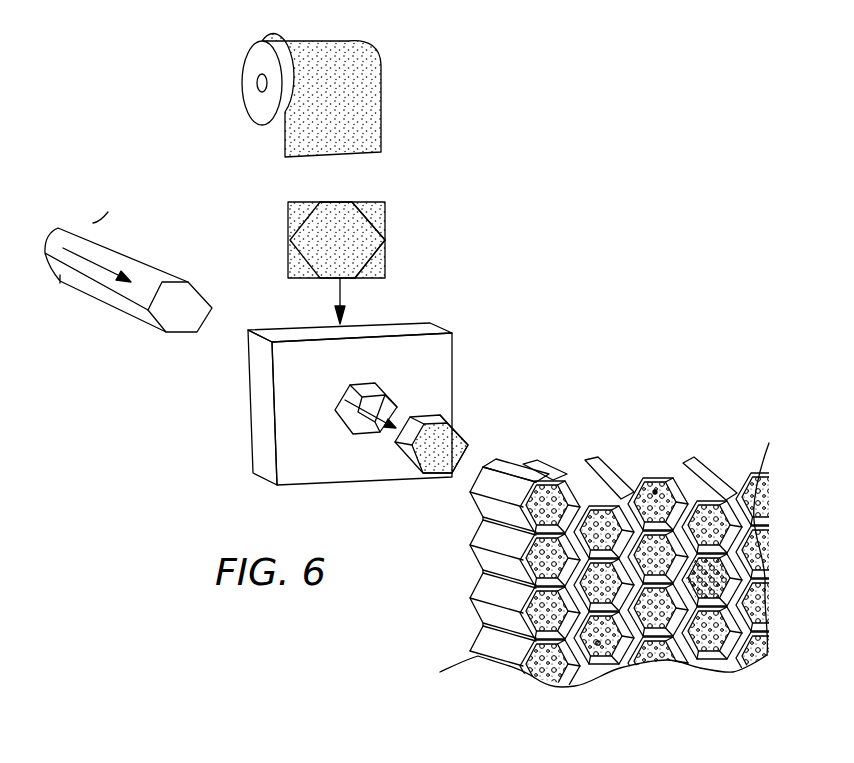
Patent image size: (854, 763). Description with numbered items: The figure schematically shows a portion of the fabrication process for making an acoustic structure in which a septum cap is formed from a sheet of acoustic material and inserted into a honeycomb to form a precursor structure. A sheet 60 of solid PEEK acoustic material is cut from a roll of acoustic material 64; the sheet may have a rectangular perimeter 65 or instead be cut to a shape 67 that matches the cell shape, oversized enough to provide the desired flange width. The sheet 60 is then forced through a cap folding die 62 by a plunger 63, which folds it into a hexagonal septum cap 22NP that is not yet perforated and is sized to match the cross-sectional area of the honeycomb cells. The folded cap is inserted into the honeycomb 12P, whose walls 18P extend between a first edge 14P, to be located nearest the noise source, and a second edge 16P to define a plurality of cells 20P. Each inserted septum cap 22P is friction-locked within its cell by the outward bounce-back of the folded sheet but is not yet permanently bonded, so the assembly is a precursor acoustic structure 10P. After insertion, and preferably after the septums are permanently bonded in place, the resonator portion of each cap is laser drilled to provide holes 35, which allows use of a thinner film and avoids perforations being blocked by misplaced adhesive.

The roll of acoustic material 64 is at (357, 62).
The perimeter 65 is at (367, 200).
The shape matching the cell shape 67 is at (302, 220).
The sheet of acoustic material 60 is at (385, 253).
The cap folding die 62 is at (435, 365).
The plunger 63 is at (92, 288).
The septum cap (not perforated) 22NP is at (413, 452).
The precursor acoustic structure 10P is at (612, 537).
The holes 35 is at (656, 492).
The honeycomb (precursor) 12P is at (747, 513).
The cells (precursor) 20P is at (717, 582).
The second edge (precursor) 16P is at (486, 634).
The first edge (precursor) 14P is at (532, 656).
The septum cap (precursor) 22P is at (667, 618).
The walls (precursor) 18P is at (730, 647).